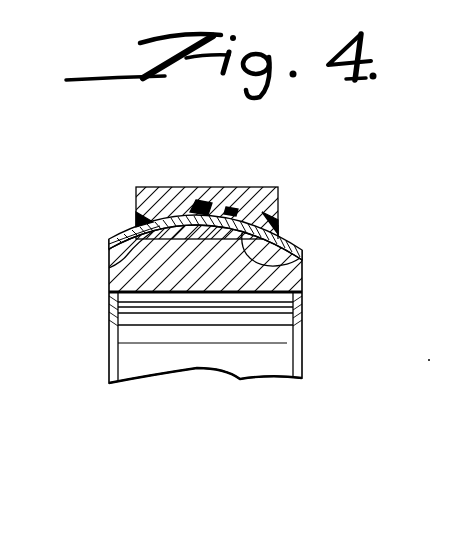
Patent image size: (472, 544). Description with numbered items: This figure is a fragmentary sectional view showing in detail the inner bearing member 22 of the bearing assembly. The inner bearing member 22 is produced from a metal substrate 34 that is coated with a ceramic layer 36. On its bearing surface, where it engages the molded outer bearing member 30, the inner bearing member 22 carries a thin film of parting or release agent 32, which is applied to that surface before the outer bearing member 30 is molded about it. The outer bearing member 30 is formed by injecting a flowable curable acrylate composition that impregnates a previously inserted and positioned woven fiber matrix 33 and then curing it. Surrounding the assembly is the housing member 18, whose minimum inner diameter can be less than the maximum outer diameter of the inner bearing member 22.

The housing member 18 is at (276, 188).
The inner bearing member 22 is at (249, 345).
The outer bearing member 30 is at (252, 214).
The parting or release agent 32 is at (284, 246).
The woven fiber matrix 33 is at (297, 266).
The metal substrate 34 is at (139, 284).
The ceramic layer 36 is at (109, 268).